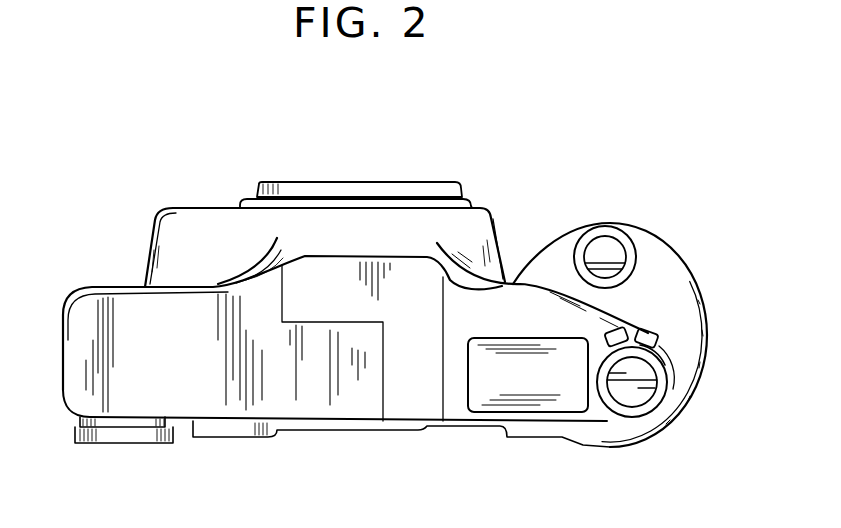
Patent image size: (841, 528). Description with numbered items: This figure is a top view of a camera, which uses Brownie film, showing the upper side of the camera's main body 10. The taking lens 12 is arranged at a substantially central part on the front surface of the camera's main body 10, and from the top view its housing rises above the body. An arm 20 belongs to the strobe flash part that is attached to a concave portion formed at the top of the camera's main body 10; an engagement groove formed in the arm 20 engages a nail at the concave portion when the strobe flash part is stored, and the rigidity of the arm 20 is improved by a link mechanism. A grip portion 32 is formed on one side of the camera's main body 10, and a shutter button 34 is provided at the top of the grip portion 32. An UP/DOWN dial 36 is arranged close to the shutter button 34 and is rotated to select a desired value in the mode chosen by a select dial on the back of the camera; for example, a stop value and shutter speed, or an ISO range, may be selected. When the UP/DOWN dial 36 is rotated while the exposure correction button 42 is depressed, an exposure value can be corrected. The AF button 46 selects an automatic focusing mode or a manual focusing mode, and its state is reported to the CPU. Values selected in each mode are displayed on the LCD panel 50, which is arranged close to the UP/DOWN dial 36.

The camera's main body 10 is at (113, 278).
The taking lens 12 is at (391, 182).
The arm 20 is at (407, 397).
The grip portion 32 is at (660, 233).
The shutter button 34 is at (609, 252).
The UP/DOWN dial 36 is at (634, 390).
The exposure correction button 42 is at (657, 332).
The AF button 46 is at (610, 325).
The LCD panel 50 is at (493, 395).